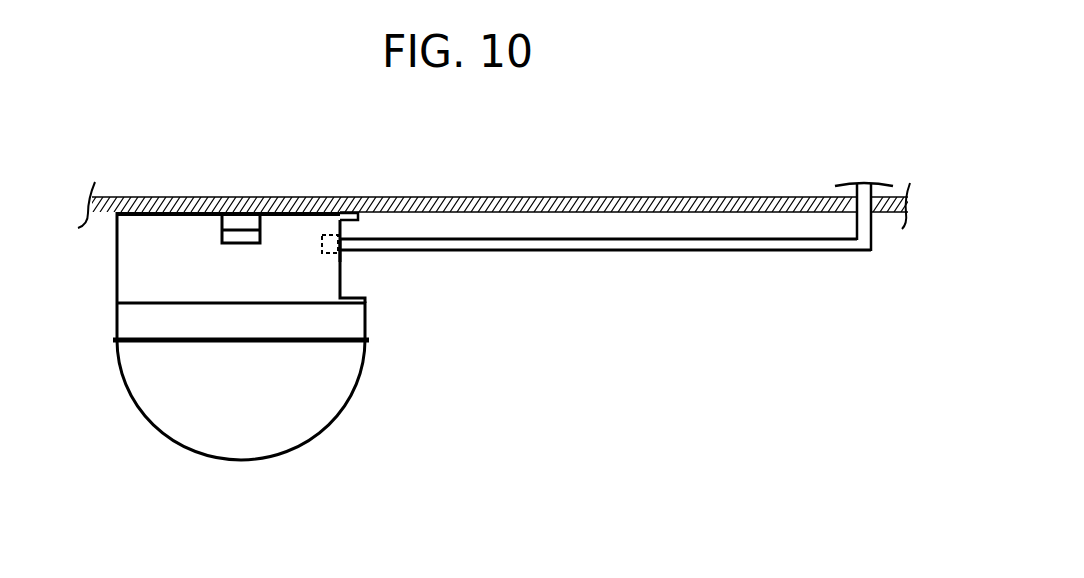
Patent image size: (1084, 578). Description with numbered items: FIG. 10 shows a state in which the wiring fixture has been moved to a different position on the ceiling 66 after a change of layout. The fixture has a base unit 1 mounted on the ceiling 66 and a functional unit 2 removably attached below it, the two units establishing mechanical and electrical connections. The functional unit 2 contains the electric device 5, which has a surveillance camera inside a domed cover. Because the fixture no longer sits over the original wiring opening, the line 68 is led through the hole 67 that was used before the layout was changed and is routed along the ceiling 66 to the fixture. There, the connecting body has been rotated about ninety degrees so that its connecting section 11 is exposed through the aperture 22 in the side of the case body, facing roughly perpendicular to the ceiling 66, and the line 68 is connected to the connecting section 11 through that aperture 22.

The base unit 1 is at (242, 223).
The functional unit 2 is at (117, 243).
The electric device 5 is at (340, 410).
The connecting section 11 is at (340, 251).
The aperture 22 is at (340, 253).
The ceiling 66 is at (460, 197).
The hole 67 is at (877, 212).
The line 68 is at (635, 243).